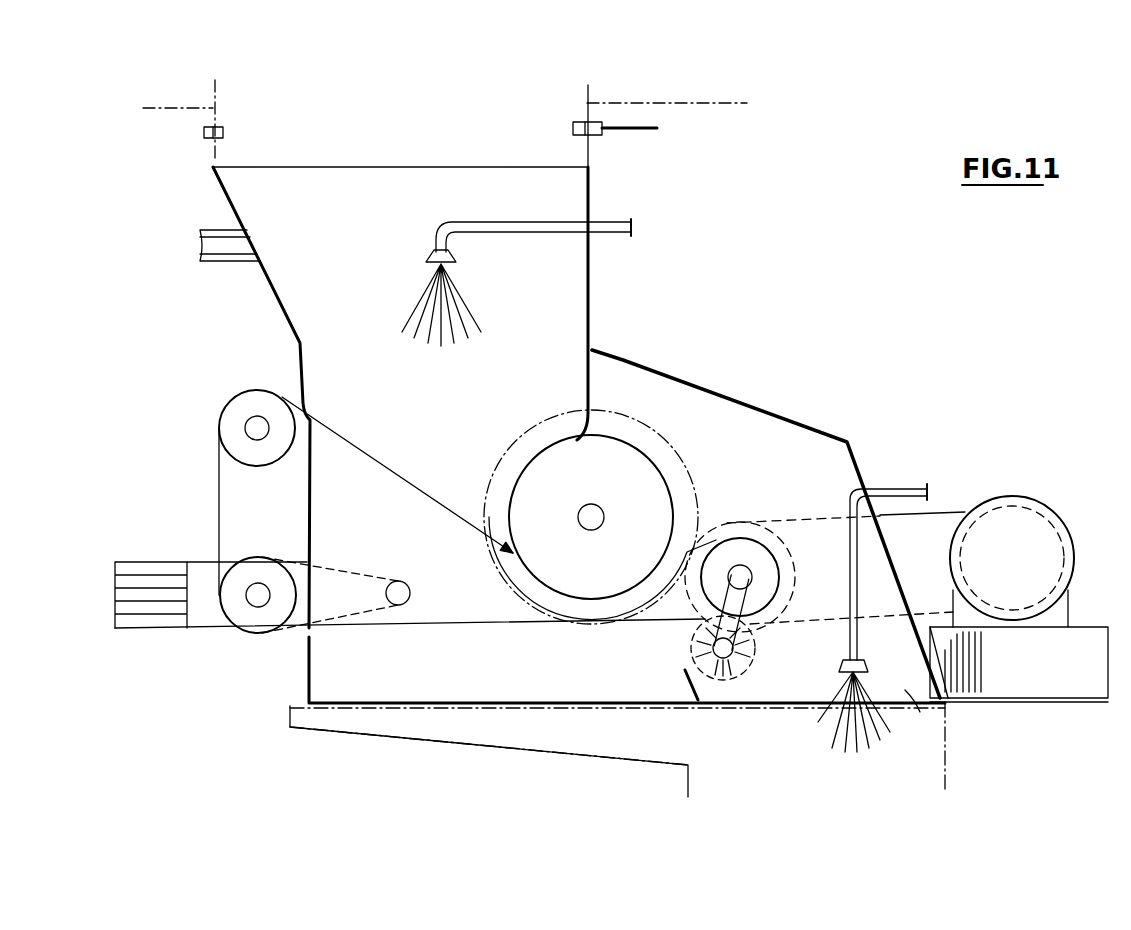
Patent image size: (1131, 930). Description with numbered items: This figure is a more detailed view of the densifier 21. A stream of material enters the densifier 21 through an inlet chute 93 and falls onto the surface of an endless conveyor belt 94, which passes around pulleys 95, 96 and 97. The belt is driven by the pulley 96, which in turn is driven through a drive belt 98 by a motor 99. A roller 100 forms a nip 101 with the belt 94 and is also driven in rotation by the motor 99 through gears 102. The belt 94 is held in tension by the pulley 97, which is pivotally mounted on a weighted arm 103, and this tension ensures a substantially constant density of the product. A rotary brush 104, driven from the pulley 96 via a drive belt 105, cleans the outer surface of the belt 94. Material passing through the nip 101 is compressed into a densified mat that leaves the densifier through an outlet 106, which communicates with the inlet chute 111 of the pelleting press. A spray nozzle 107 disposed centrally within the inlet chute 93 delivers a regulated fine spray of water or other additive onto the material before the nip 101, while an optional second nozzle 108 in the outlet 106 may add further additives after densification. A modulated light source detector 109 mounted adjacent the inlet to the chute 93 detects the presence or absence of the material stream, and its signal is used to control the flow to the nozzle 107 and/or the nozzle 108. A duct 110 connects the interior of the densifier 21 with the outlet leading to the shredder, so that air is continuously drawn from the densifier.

The densifier 21 is at (708, 377).
The inlet chute 93 is at (590, 197).
The endless conveyor belt 94 is at (395, 473).
The pulley 95 is at (228, 432).
The pulley 96 is at (760, 552).
The pulley 97 is at (240, 615).
The drive belt 98 is at (945, 512).
The motor 99 is at (1025, 522).
The roller 100 is at (647, 480).
The nip 101 is at (490, 540).
The gears 102 is at (730, 525).
The weighted arm 103 is at (152, 568).
The rotary brush 104 is at (693, 642).
The drive belt 105 is at (763, 600).
The outlet 106 is at (913, 692).
The spray nozzle 107 is at (448, 255).
The second nozzle 108 is at (843, 662).
The modulated light source detector 109 is at (595, 136).
The duct 110 is at (218, 262).
The inlet chute 111 is at (565, 752).